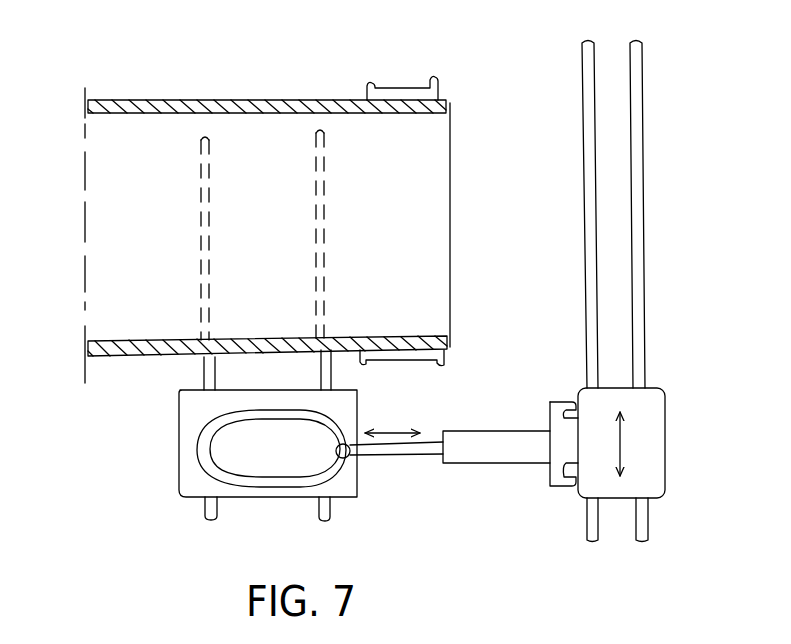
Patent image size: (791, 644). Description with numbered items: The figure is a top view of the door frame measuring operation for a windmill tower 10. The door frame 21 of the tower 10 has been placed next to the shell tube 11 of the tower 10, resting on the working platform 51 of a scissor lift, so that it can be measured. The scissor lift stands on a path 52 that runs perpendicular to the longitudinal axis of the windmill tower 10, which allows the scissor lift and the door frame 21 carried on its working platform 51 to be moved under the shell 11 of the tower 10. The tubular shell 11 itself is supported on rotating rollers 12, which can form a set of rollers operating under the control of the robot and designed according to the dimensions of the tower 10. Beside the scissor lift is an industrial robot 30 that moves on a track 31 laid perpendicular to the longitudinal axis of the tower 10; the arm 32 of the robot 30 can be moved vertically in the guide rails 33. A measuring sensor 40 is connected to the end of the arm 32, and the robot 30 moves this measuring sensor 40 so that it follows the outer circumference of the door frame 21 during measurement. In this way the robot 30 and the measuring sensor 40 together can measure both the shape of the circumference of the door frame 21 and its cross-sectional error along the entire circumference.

The windmill tower 10 is at (302, 88).
The shell tube 11 is at (200, 100).
The rotating rollers 12 is at (402, 88).
The door frame 21 is at (210, 427).
The industrial robot 30 is at (667, 410).
The track 31 is at (642, 117).
The arm 32 is at (492, 465).
The guide rail 33 is at (575, 407).
The measuring sensor 40 is at (350, 460).
The working platform 51 is at (192, 481).
The path 52 is at (200, 517).